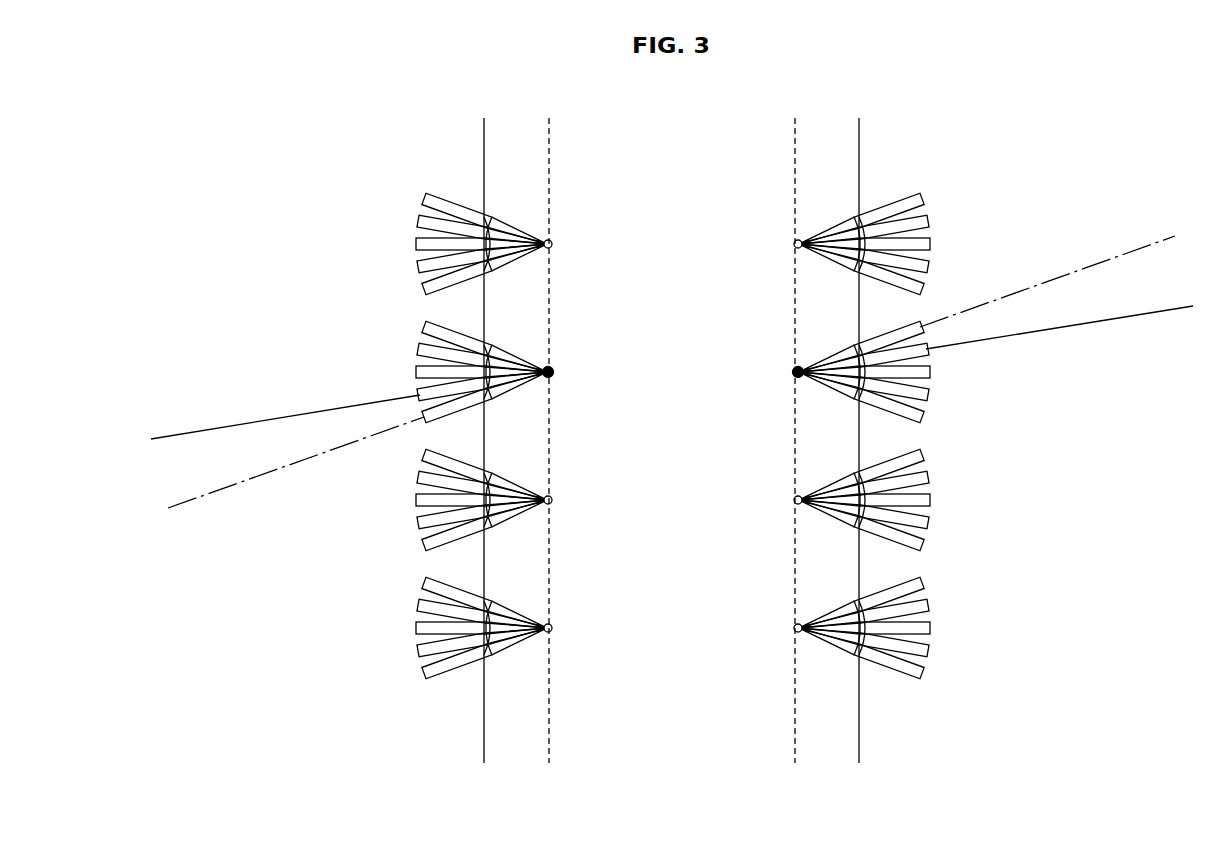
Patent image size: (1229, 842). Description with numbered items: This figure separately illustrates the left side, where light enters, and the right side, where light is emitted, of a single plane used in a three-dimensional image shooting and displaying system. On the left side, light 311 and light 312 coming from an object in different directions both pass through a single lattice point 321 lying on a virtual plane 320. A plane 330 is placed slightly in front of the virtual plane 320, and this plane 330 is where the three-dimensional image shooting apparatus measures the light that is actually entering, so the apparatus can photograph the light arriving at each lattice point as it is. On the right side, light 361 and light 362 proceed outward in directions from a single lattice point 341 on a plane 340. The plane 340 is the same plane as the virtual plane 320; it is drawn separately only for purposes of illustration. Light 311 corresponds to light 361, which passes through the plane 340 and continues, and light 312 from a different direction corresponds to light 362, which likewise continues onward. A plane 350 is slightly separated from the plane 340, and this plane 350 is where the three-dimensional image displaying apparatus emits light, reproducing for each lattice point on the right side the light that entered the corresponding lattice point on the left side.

The light 311 is at (273, 420).
The light 312 is at (275, 472).
The virtual plane 320 is at (549, 152).
The lattice point 321 is at (555, 368).
The plane 330 is at (485, 152).
The plane 340 is at (795, 152).
The lattice point 341 is at (790, 370).
The plane 350 is at (859, 152).
The light 361 is at (1078, 327).
The light 362 is at (1057, 280).